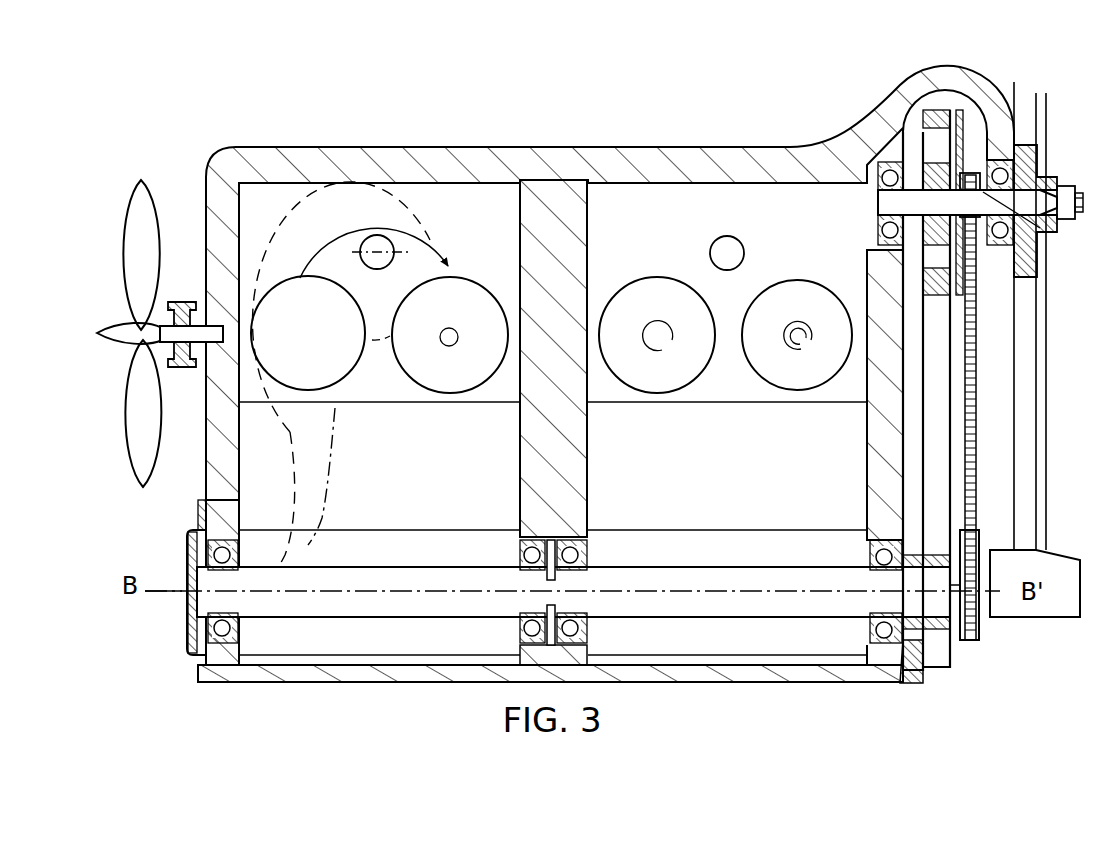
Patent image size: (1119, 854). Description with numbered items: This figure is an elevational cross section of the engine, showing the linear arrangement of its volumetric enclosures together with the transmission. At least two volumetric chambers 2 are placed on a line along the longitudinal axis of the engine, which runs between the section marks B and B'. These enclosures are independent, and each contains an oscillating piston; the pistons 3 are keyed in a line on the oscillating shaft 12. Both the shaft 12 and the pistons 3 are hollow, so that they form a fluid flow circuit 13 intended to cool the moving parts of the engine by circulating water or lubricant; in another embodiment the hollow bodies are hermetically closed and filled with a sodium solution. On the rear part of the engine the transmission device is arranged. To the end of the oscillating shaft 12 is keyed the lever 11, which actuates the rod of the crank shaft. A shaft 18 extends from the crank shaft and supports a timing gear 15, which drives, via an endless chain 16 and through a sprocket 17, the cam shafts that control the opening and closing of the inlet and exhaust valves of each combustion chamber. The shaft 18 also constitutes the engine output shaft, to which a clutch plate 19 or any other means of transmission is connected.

The volumetric chamber 2 is at (551, 388).
The piston 3 is at (377, 235).
The lever 11 is at (942, 353).
The oscillating shaft 12 is at (347, 607).
The fluid flow circuit 13 is at (308, 543).
The timing gear 15 is at (1037, 228).
The endless chain 16 is at (977, 447).
The sprocket 17 is at (977, 612).
The shaft 18 is at (1040, 202).
The clutch plate 19 is at (1028, 122).